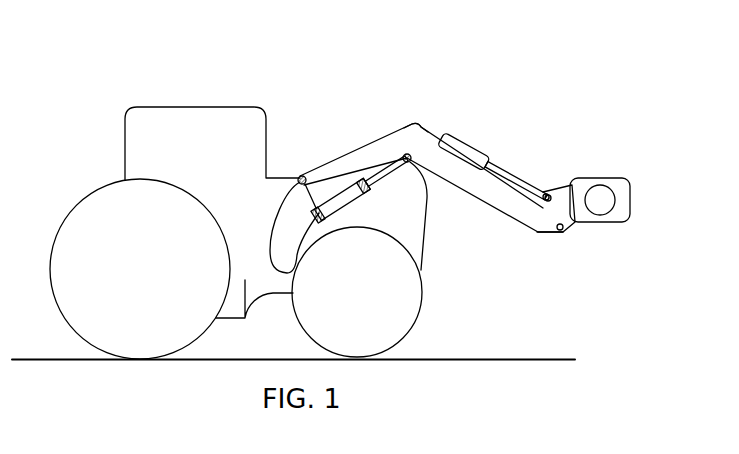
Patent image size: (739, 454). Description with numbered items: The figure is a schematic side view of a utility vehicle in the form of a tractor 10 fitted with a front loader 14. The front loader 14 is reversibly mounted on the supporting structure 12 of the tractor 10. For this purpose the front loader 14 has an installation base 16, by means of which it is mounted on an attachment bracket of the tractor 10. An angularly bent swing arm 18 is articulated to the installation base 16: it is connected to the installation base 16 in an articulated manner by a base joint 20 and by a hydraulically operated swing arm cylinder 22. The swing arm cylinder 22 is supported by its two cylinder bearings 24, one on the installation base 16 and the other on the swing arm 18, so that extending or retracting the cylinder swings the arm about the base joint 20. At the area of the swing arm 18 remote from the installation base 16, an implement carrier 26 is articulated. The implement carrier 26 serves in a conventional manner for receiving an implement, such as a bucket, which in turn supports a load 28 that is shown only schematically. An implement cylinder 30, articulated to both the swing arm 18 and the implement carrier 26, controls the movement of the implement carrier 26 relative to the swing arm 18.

The tractor 10 is at (280, 57).
The supporting structure 12 is at (243, 319).
The front loader 14 is at (377, 118).
The installation base 16 is at (297, 221).
The swing arm 18 is at (408, 127).
The base joint 20 is at (302, 172).
The swing arm cylinder 22 is at (362, 206).
The cylinder bearings 24 is at (322, 222).
The implement carrier 26 is at (570, 228).
The load 28 is at (610, 168).
The implement cylinder 30 is at (486, 137).